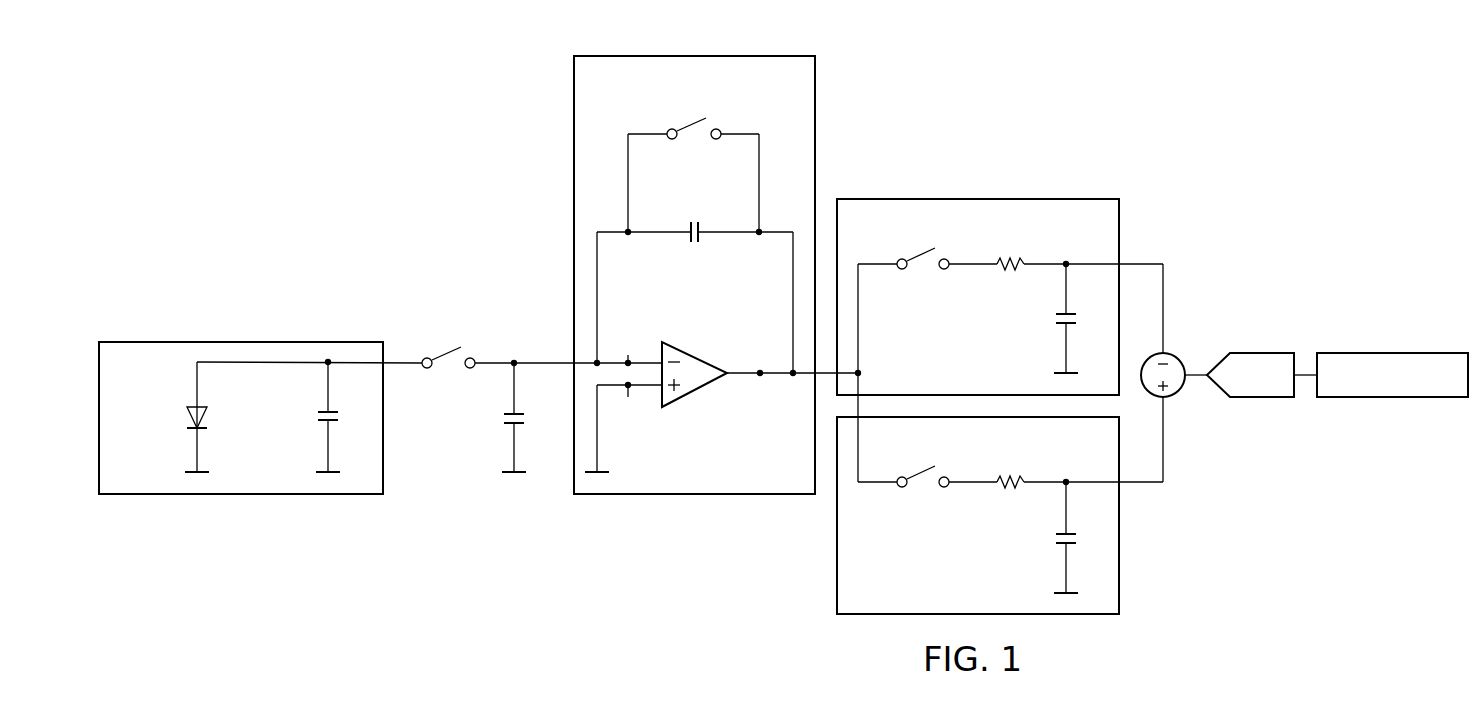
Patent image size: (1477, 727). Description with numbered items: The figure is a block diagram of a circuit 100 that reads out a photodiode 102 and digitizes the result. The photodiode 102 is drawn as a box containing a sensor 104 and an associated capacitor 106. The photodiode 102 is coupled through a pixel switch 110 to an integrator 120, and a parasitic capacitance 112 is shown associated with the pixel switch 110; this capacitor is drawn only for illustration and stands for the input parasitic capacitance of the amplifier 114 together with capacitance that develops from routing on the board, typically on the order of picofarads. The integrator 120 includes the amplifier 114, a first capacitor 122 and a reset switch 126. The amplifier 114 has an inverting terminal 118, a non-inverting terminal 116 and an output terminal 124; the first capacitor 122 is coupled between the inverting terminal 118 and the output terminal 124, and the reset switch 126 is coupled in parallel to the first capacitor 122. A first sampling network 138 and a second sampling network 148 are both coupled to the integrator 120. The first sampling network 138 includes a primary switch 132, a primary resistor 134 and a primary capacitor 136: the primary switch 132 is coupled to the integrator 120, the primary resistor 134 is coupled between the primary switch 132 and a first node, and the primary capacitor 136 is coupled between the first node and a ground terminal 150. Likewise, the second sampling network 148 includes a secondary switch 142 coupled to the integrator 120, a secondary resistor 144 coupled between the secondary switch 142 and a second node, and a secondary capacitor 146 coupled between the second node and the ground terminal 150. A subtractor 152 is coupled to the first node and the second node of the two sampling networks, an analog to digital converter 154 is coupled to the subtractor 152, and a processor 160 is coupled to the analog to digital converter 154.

The circuit 100 is at (492, 96).
The photodiode 102 is at (206, 496).
The sensor 104 is at (188, 425).
The capacitor Ca 106 is at (318, 417).
The pixel switch PS 110 is at (448, 353).
The parasitic capacitance Cpa 112 is at (502, 418).
The amplifier 114 is at (695, 353).
The non-inverting terminal 116 is at (638, 397).
The inverting terminal 118 is at (638, 355).
The integrator 120 is at (659, 54).
The first capacitor C1 122 is at (695, 244).
The output terminal 124 is at (760, 382).
The reset switch RS 126 is at (693, 120).
The primary switch Sp 132 is at (922, 252).
The primary resistor Rp 134 is at (1013, 256).
The primary capacitor Cp 136 is at (1052, 318).
The first sampling network 138 is at (1044, 197).
The secondary switch Ss 142 is at (922, 470).
The secondary resistor Rs 144 is at (1013, 474).
The secondary capacitor Cs 146 is at (1052, 538).
The second sampling network 148 is at (1068, 618).
The ground terminal 150 is at (1060, 382).
The subtractor 152 is at (1176, 353).
The analog to digital converter (ADC) 154 is at (1262, 352).
The processor 160 is at (1393, 352).